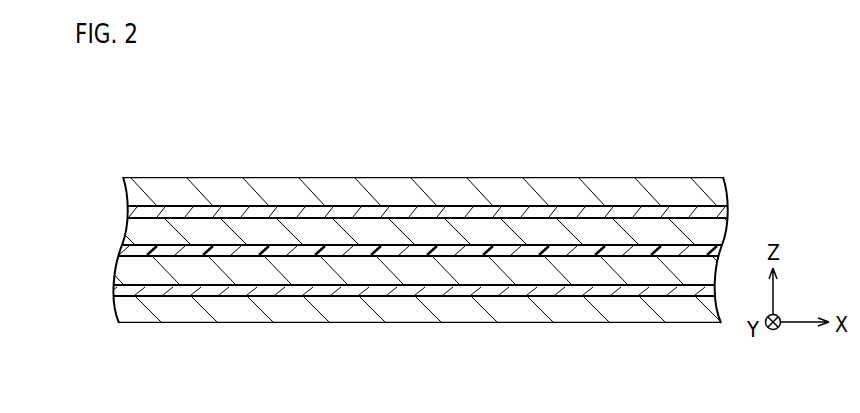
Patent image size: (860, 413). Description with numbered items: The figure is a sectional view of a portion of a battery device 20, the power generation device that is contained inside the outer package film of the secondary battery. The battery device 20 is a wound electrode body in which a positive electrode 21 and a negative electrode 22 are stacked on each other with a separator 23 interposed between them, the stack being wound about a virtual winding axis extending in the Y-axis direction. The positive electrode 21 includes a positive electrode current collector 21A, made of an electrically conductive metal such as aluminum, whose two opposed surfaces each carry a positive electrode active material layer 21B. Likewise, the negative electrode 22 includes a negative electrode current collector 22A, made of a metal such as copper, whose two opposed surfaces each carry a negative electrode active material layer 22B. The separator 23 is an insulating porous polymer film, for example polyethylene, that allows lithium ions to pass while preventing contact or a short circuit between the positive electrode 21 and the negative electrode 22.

The battery device 20 is at (747, 128).
The positive electrode 21 is at (357, 93).
The positive electrode current collector 21A is at (203, 205).
The positive electrode active material layer 21B is at (332, 192).
The negative electrode 22 is at (607, 93).
The negative electrode current collector 22A is at (452, 288).
The negative electrode active material layer 22B is at (583, 267).
The separator 23 is at (675, 253).